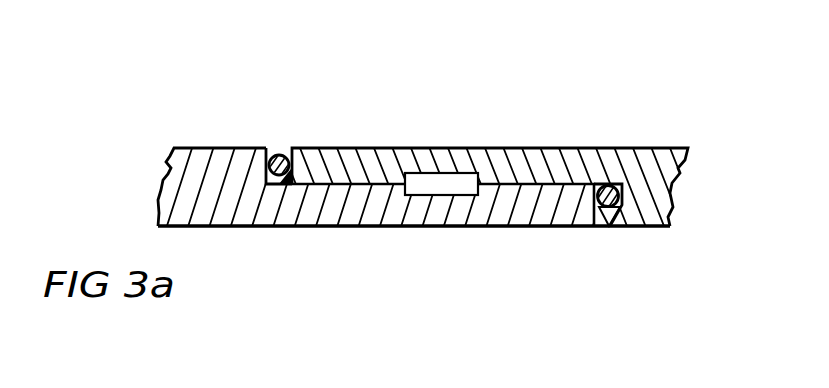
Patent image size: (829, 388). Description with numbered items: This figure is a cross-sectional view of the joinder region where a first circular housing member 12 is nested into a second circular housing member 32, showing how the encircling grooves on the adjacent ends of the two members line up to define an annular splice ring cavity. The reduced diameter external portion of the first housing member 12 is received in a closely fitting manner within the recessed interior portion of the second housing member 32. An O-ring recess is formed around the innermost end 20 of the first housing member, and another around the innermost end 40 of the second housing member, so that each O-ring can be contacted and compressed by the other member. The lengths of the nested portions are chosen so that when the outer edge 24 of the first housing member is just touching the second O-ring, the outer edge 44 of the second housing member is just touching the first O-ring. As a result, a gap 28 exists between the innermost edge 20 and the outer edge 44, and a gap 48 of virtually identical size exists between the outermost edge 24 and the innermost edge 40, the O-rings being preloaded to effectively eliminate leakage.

The first circular housing member 12 is at (163, 190).
The innermost end of the reduced diameter external portion 20 is at (266, 150).
The outer edge of the first housing member 24 is at (574, 228).
The gap 28 is at (287, 152).
The second circular housing member 32 is at (613, 148).
The innermost end of the recessed interior portion 40 is at (628, 228).
The outer edge of the second housing member 44 is at (293, 156).
The gap 48 is at (601, 228).